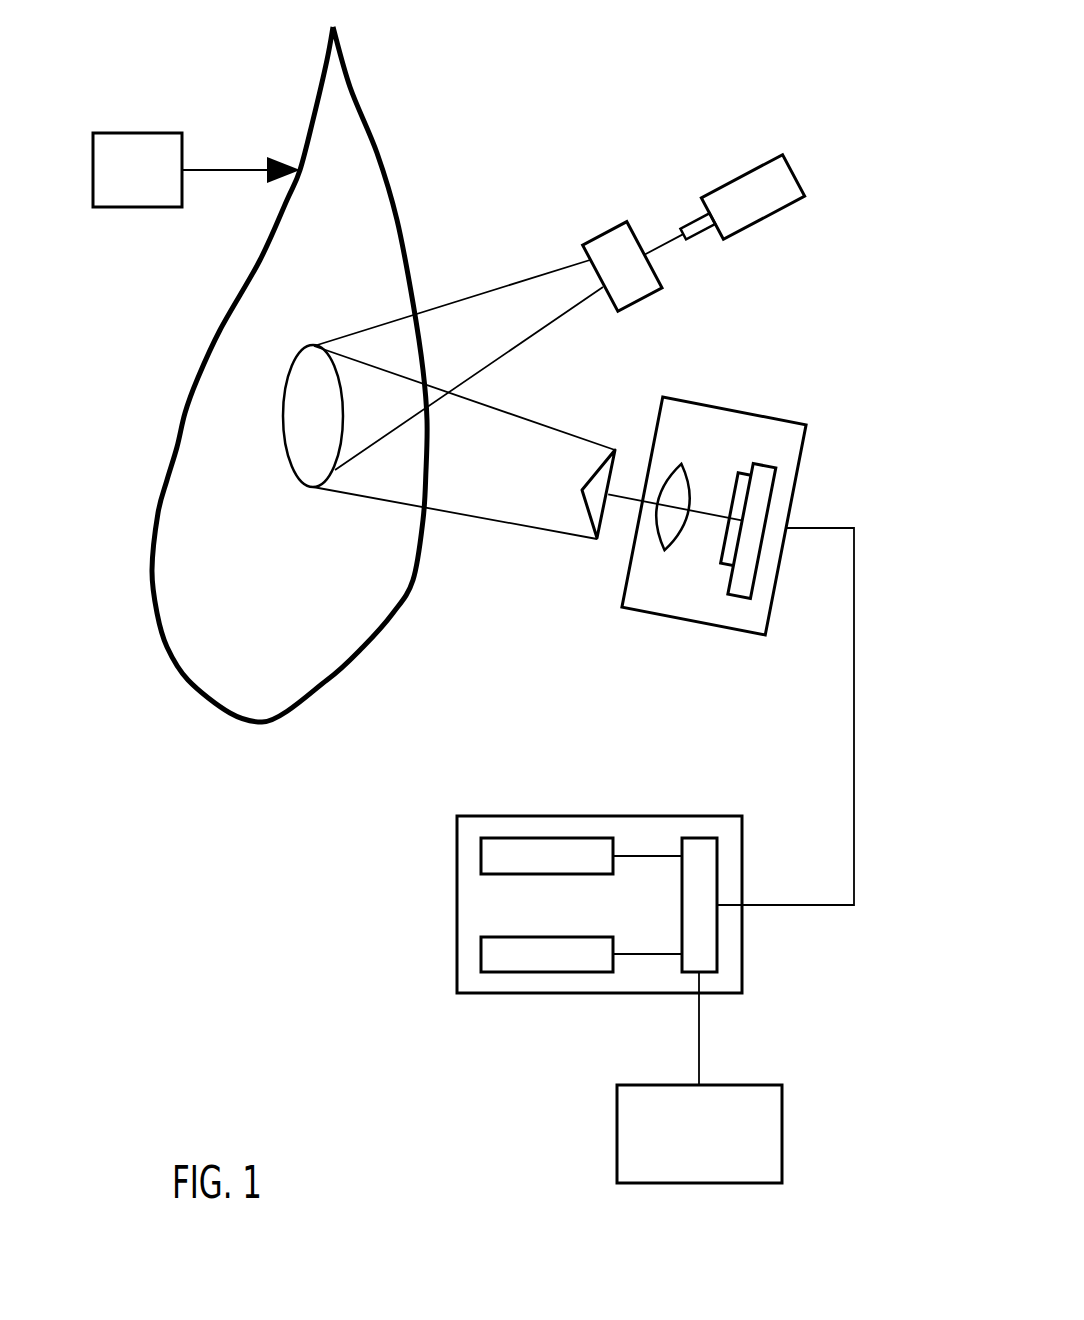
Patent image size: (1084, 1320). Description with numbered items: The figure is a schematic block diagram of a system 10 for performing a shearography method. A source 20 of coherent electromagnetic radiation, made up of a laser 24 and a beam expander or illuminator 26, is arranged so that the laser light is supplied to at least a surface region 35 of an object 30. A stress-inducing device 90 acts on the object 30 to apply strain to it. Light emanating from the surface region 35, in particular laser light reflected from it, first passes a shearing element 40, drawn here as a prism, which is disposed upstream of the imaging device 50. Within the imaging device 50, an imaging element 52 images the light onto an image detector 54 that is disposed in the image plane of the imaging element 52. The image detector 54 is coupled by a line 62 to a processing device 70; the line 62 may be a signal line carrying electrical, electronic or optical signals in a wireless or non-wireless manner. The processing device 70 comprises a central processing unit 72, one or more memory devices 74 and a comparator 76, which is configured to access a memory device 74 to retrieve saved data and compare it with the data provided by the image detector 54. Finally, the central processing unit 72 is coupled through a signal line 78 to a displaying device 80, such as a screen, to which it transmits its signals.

The system 10 is at (298, 982).
The source 20 is at (712, 240).
The laser 24 is at (775, 213).
The beam expander or illuminator 26 is at (638, 300).
The object 30 is at (210, 705).
The surface region 35 is at (285, 460).
The shearing element 40 is at (587, 522).
The imaging device 50 is at (697, 524).
The imaging element 52 is at (665, 552).
The image detector 54 is at (773, 456).
The line 62 is at (854, 713).
The processing device 70 is at (623, 915).
The central processing unit 72 is at (717, 858).
The memory device 74 is at (481, 950).
The comparator 76 is at (481, 850).
The signal line 78 is at (699, 1037).
The displaying device 80 is at (782, 1130).
The stress-inducing device 90 is at (113, 133).